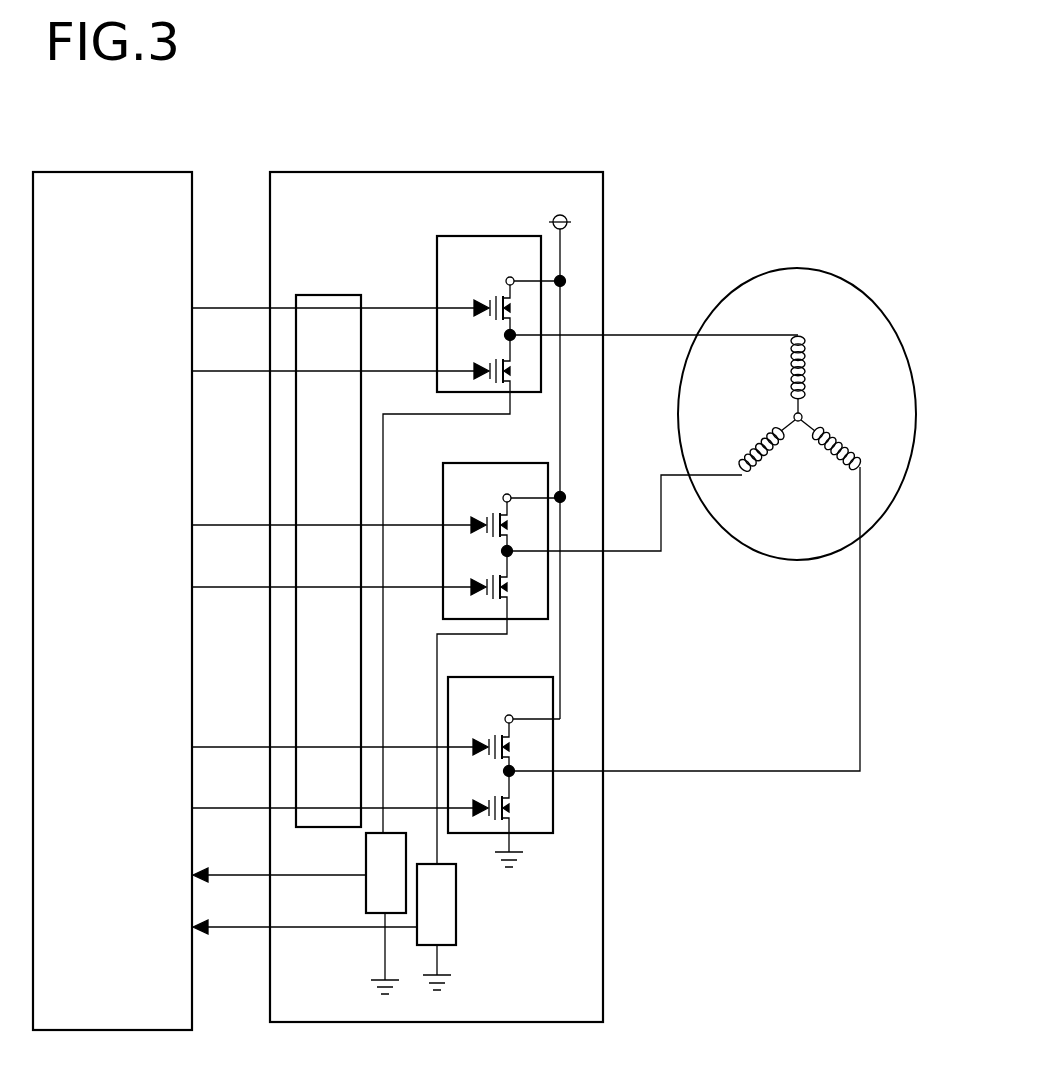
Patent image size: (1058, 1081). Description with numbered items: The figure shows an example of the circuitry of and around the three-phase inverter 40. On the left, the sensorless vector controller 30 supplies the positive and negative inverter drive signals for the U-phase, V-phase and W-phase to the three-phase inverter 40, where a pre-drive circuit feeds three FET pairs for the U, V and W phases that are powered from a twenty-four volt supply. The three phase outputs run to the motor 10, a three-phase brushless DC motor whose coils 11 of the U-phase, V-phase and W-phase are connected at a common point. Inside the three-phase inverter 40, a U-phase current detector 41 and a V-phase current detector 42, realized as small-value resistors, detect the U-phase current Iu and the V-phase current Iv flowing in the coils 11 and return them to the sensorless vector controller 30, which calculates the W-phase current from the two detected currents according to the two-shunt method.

The motor 10 is at (753, 277).
The coils 11 is at (807, 372).
The sensorless vector controller 30 is at (133, 171).
The 3-phase inverter 40 is at (493, 171).
The U-phase current detector 41 is at (372, 888).
The V-phase current detector 42 is at (457, 912).